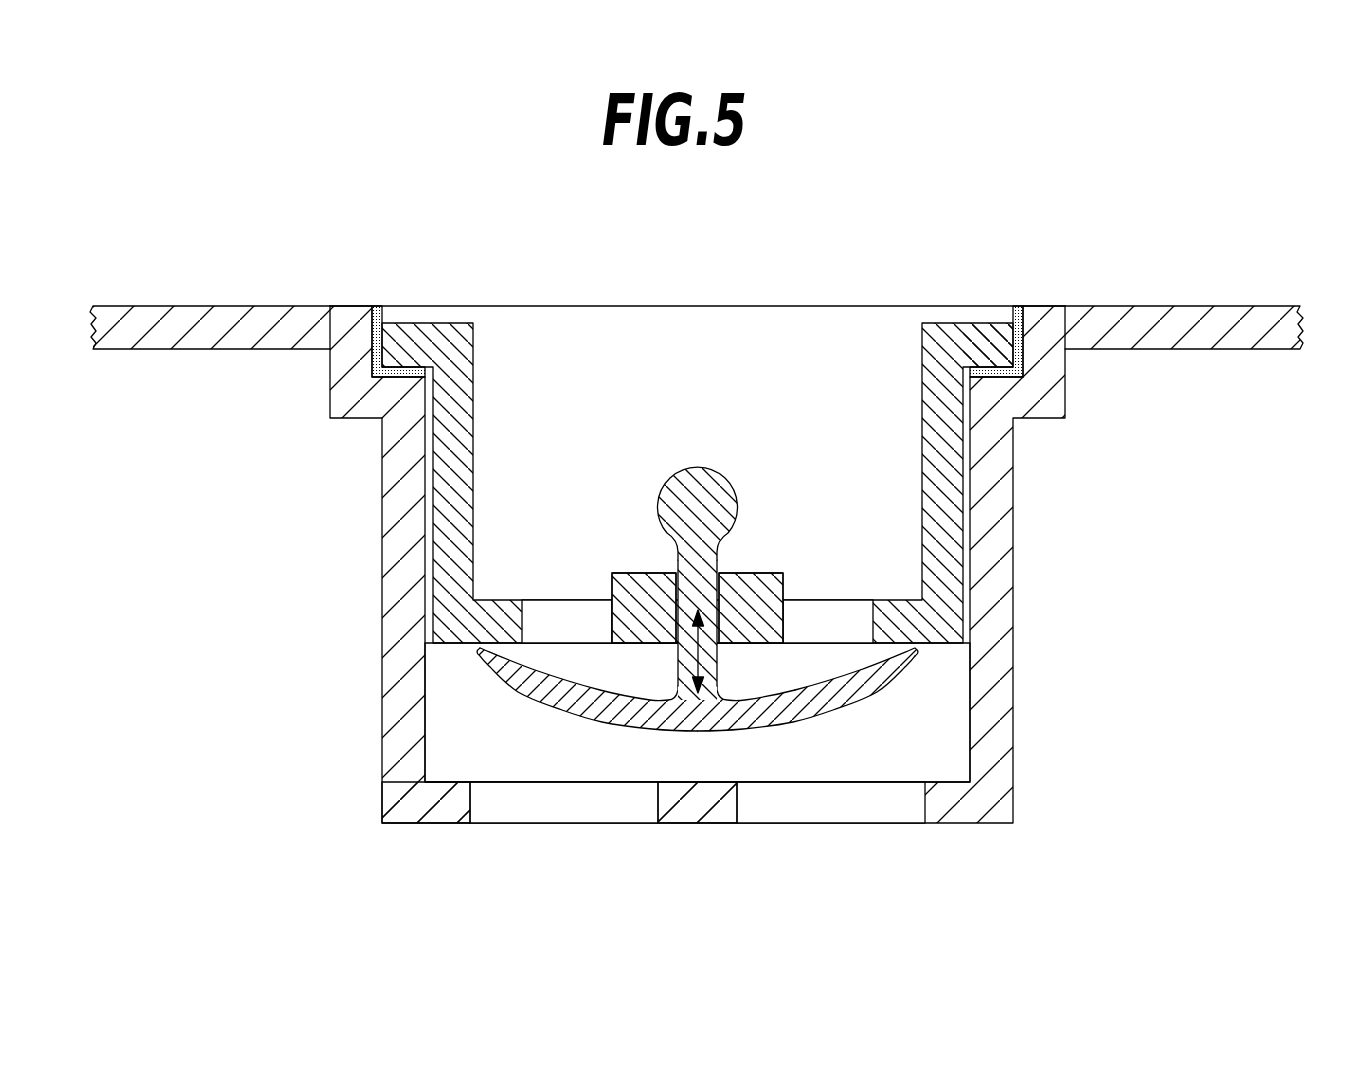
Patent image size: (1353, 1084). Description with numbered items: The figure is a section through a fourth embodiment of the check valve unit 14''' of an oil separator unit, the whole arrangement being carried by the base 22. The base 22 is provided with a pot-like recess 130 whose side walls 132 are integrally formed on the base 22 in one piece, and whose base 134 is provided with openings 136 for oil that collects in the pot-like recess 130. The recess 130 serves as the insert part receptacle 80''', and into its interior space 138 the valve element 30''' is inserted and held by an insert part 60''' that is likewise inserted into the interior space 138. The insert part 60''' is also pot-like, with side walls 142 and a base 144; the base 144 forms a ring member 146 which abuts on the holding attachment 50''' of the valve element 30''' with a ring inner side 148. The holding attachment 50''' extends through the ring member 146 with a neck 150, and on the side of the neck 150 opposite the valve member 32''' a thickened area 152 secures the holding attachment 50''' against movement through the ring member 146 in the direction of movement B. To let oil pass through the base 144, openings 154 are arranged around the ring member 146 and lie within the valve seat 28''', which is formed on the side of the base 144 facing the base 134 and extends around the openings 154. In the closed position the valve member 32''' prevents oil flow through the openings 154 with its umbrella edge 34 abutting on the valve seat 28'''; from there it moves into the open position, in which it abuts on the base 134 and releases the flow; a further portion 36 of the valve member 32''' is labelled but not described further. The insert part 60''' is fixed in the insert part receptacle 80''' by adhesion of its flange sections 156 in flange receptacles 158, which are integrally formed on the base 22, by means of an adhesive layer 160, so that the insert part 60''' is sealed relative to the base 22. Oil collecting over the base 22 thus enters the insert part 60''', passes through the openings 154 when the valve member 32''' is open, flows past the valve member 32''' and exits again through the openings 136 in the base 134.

The vehicle interior assembly 14''' is at (696, 554).
The base 22 is at (1220, 328).
The insert part receptacle 80''' is at (690, 605).
The pot-like recess 130 is at (731, 605).
The side walls 132 is at (990, 517).
The base 134 is at (670, 810).
The openings 136 is at (522, 802).
The interior space 138 is at (933, 762).
The side walls 142 is at (462, 455).
The base 144 is at (648, 630).
The ring member 146 is at (763, 580).
The ring inner side 148 is at (708, 590).
The neck 150 is at (668, 597).
The thickened area 152 is at (680, 485).
The openings 154 is at (542, 617).
The flange sections 156 is at (990, 340).
The flange receptacles 158 is at (372, 352).
The adhesive layer 160 is at (1013, 340).
The valve seat 28''' is at (558, 694).
The valve element 30''' is at (606, 776).
The valve member 32''' is at (807, 780).
The umbrella edge 34 is at (907, 643).
The arm root portion 36 is at (718, 713).
The holding attachment 50''' is at (766, 652).
The insert part 60''' is at (699, 429).
The direction of movement B is at (705, 660).